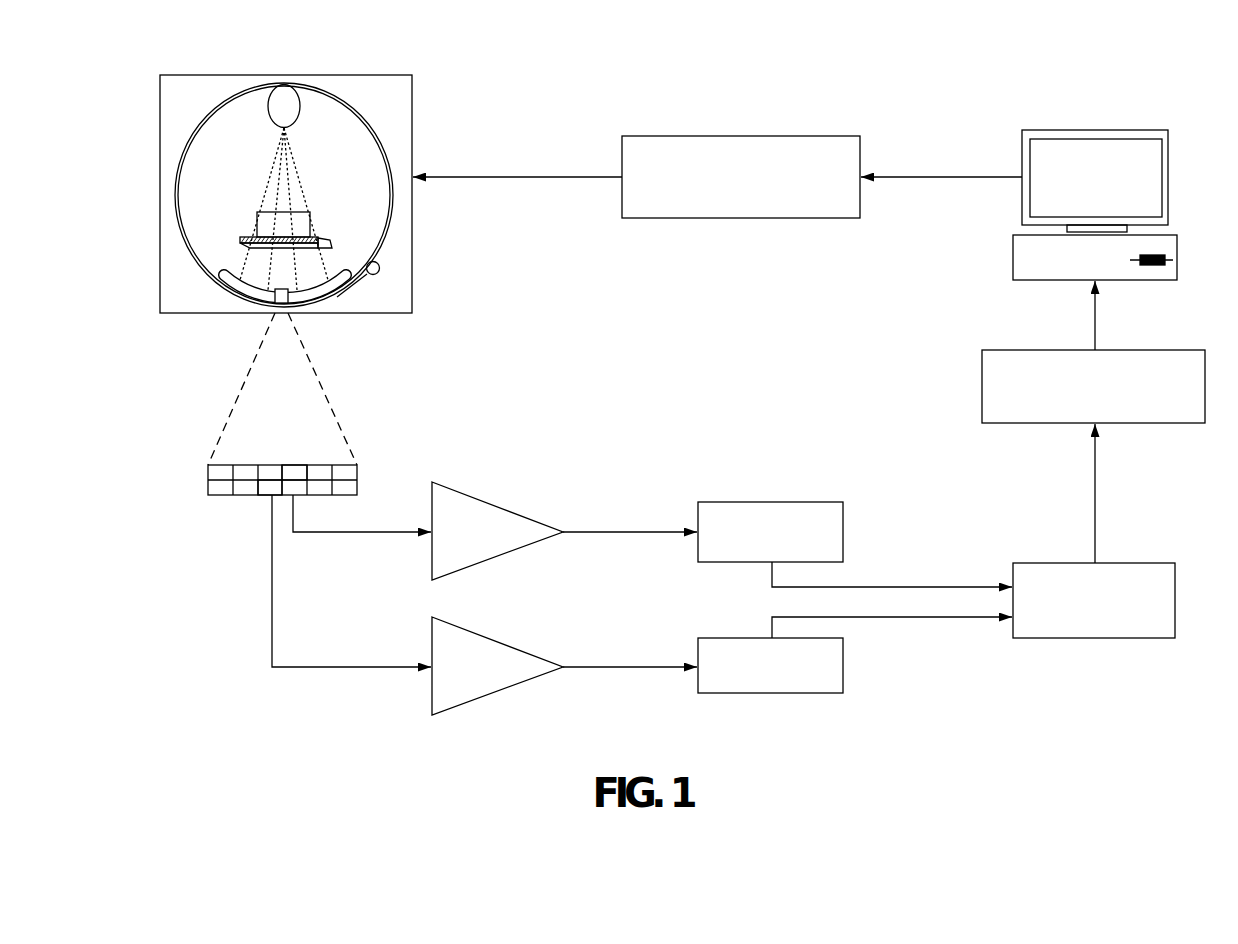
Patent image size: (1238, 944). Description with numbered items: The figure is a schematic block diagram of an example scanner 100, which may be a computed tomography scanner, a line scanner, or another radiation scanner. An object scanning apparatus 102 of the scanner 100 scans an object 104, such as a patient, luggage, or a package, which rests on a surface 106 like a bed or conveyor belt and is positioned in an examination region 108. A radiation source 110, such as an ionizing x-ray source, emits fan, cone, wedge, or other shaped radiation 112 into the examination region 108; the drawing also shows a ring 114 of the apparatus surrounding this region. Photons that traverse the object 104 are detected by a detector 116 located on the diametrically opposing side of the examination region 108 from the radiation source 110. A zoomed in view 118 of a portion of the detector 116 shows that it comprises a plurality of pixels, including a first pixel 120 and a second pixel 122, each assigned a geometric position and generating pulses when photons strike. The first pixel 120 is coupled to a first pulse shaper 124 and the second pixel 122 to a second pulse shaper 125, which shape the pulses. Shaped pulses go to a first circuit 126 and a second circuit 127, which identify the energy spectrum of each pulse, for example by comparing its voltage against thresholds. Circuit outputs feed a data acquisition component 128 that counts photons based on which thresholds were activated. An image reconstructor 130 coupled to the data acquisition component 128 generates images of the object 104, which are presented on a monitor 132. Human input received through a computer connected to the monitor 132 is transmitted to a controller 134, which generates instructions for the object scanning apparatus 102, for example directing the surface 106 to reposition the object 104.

The scanner 100 is at (157, 50).
The object scanning apparatus 102 is at (413, 105).
The object 104 is at (255, 228).
The surface 106 is at (325, 240).
The examination region 108 is at (280, 197).
The radiation source 110 is at (293, 88).
The radiation 112 is at (300, 176).
The rotating gantry ring 114 is at (195, 131).
The detector 116 is at (219, 279).
The zoomed in view 118 is at (208, 465).
The first pixel 120 is at (291, 488).
The second pixel 122 is at (266, 490).
The first pulse shaper 124 is at (438, 480).
The second pulse shaper 125 is at (438, 616).
The first circuit 126 is at (698, 502).
The second circuit 127 is at (698, 638).
The data acquisition component 128 is at (1013, 563).
The image reconstructor 130 is at (982, 350).
The monitor 132 is at (1022, 131).
The controller 134 is at (622, 136).